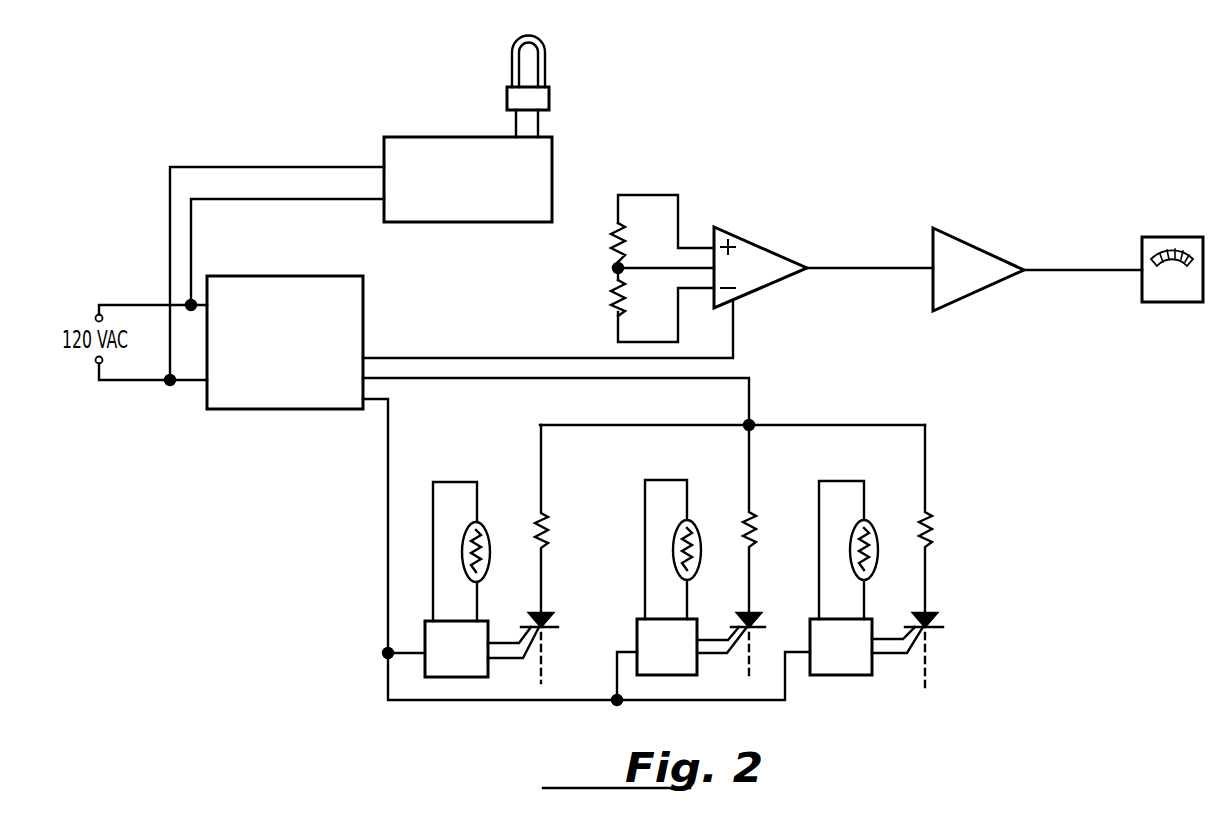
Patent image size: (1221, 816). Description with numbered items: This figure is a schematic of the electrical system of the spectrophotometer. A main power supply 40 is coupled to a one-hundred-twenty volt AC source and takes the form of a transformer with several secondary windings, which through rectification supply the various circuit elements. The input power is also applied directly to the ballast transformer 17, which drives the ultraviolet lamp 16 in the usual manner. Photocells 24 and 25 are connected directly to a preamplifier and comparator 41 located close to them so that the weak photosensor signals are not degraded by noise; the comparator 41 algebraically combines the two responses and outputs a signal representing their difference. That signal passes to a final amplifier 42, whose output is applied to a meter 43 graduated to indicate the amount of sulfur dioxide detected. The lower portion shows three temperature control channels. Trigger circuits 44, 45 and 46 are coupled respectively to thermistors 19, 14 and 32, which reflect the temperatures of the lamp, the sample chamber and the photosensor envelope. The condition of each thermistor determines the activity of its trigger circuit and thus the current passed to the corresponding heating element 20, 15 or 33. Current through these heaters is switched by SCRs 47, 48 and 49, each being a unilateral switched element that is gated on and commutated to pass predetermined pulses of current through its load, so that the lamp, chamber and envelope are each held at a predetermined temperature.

The heat detector 14 is at (692, 530).
The heating element 15 is at (756, 530).
The lamp 16 is at (545, 53).
The ballast transformer 17 is at (538, 164).
The thermistor 19 is at (484, 530).
The resistive heating element 20 is at (546, 530).
The photocell 24 is at (610, 232).
The photocell 25 is at (612, 288).
The thermistor 32 is at (875, 538).
The heating element 33 is at (935, 530).
The main power supply 40 is at (353, 318).
The preamplifier and comparator 41 is at (757, 250).
The final amplifier 42 is at (958, 256).
The meter 43 is at (1157, 244).
The trigger circuit 44 is at (456, 649).
The trigger circuit 45 is at (667, 647).
The trigger circuit 46 is at (841, 647).
The SCR 47 is at (548, 625).
The SCR 48 is at (748, 625).
The SCR 49 is at (930, 622).